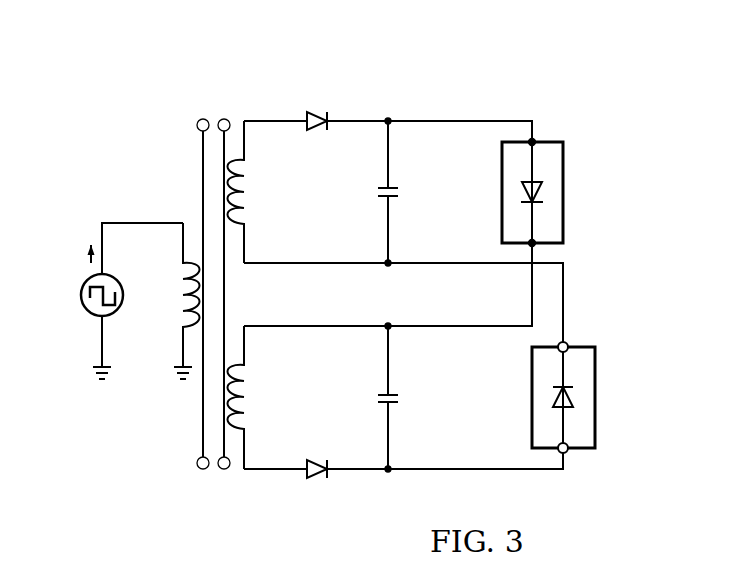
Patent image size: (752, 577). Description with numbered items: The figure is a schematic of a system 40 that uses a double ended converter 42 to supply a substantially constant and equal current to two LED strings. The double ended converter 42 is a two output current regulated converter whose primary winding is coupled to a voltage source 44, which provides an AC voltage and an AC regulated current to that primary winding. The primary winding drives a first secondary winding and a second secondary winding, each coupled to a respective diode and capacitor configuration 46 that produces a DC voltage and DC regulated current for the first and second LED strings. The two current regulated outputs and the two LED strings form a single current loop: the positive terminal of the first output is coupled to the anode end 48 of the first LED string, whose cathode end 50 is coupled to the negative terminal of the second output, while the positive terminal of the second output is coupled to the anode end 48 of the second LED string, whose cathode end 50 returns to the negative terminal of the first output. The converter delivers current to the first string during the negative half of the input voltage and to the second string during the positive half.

The system 40 is at (520, 68).
The double ended converter 42 is at (110, 158).
The voltage source 44 is at (58, 272).
The diode and capacitor configuration 46 is at (372, 178).
The anode end 48 is at (534, 139).
The cathode end 50 is at (537, 247).